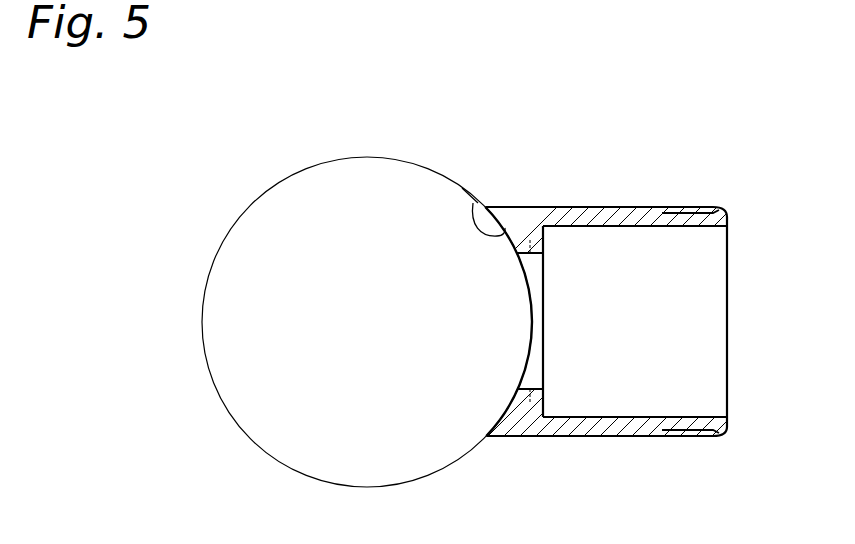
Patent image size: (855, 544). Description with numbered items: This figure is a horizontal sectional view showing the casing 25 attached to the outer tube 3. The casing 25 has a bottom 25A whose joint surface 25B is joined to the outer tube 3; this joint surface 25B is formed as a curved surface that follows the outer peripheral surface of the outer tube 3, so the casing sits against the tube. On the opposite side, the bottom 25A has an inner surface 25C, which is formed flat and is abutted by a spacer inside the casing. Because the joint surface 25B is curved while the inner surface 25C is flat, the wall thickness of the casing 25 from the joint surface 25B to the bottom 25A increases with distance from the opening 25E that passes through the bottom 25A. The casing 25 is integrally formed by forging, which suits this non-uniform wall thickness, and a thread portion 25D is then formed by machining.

The outer tube 3 is at (358, 157).
The casing 25 is at (608, 217).
The bottom 25A is at (527, 255).
The joint surface 25B is at (478, 205).
The inner surface 25C is at (553, 228).
The thread portion 25D is at (697, 207).
The opening 25E is at (532, 388).